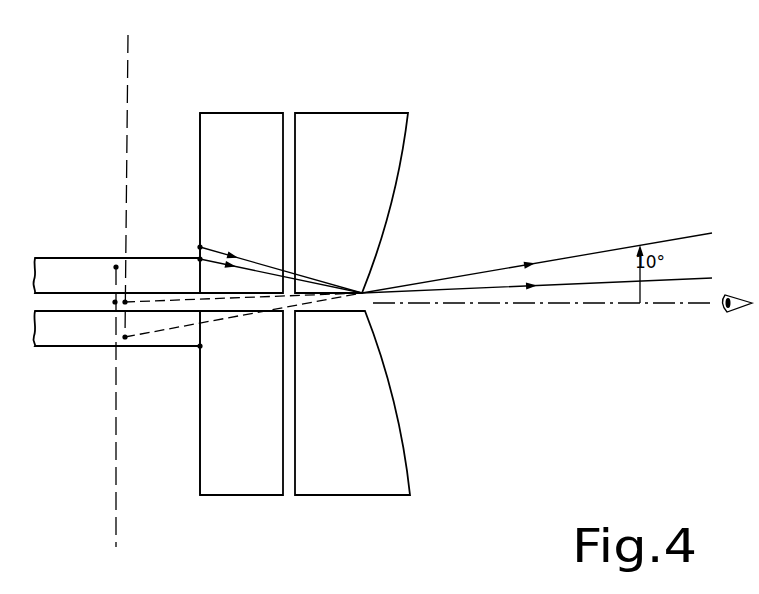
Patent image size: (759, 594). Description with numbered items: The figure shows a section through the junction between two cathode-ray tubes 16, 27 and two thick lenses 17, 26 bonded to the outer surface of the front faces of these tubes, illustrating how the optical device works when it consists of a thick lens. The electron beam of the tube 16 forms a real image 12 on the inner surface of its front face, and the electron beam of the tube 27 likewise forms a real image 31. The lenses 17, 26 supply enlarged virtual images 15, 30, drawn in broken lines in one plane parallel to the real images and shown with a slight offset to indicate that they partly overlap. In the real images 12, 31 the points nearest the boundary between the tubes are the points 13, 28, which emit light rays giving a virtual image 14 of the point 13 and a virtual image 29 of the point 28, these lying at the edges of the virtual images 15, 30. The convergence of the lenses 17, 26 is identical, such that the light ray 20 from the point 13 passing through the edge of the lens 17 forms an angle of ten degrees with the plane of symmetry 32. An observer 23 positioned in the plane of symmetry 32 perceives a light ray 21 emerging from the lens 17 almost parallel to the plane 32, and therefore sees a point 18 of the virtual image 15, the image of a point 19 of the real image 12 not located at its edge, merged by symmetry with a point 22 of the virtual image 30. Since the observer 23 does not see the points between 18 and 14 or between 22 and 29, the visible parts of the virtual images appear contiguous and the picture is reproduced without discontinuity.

The real image 12 is at (200, 156).
The point 13 is at (200, 259).
The virtual image of point 14 is at (118, 343).
The enlarged virtual image 15 is at (128, 123).
The cathode-ray tube 16 is at (242, 126).
The thick lens 17 is at (349, 126).
The point of virtual image 18 is at (127, 298).
The point of real image 19 is at (200, 247).
The light ray 20 is at (216, 264).
The light ray 21 is at (221, 253).
The point of virtual image 22 is at (115, 303).
The observer 23 is at (738, 318).
The thick lens 26 is at (363, 489).
The cathode-ray tube 27 is at (243, 482).
The point 28 is at (198, 348).
The virtual image of point 29 is at (116, 266).
The enlarged virtual image 30 is at (115, 511).
The real image 31 is at (200, 471).
The plane of symmetry 32 is at (560, 305).